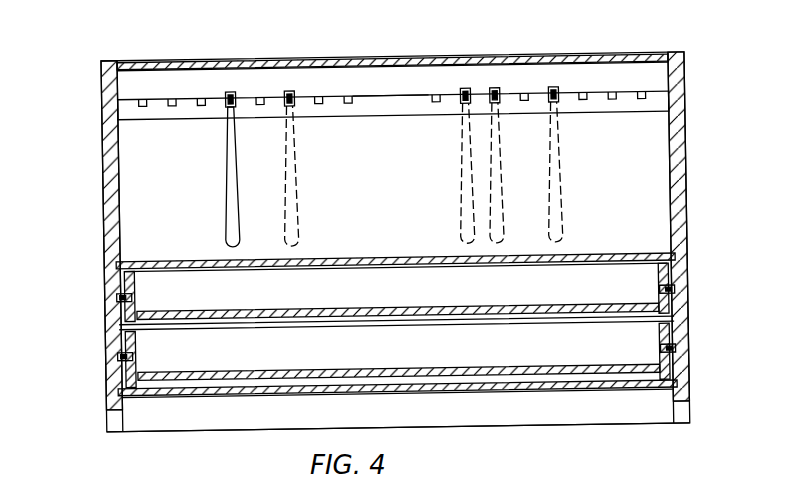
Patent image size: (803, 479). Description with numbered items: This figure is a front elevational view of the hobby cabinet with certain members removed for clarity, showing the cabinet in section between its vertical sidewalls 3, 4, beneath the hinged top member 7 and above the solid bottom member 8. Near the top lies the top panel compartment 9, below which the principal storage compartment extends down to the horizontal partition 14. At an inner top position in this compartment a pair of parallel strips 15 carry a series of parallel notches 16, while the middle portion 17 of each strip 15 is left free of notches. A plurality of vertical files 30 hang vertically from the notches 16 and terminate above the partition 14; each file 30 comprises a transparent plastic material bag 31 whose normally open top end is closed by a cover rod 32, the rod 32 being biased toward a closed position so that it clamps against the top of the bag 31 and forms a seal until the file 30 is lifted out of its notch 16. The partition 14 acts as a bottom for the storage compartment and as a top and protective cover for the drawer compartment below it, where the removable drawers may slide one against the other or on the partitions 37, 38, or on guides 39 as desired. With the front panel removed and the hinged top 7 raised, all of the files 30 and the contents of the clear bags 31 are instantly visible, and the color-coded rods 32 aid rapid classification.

The vertical sidewall 3 is at (98, 176).
The vertical sidewall 4 is at (696, 155).
The hinged top member 7 is at (567, 16).
The solid bottom member 8 is at (300, 426).
The top panel compartment 9 is at (160, 22).
The horizontal partition 14 is at (632, 253).
The parallel strips 15 is at (186, 105).
The parallel notches 16 is at (261, 99).
The middle portion of strip 17 is at (380, 100).
The vertical files 30 is at (227, 178).
The transparent plastic material bag 31 is at (232, 230).
The cover rod 32 is at (233, 94).
The partition 37 is at (138, 350).
The partition 38 is at (202, 398).
The guides 39 is at (676, 288).